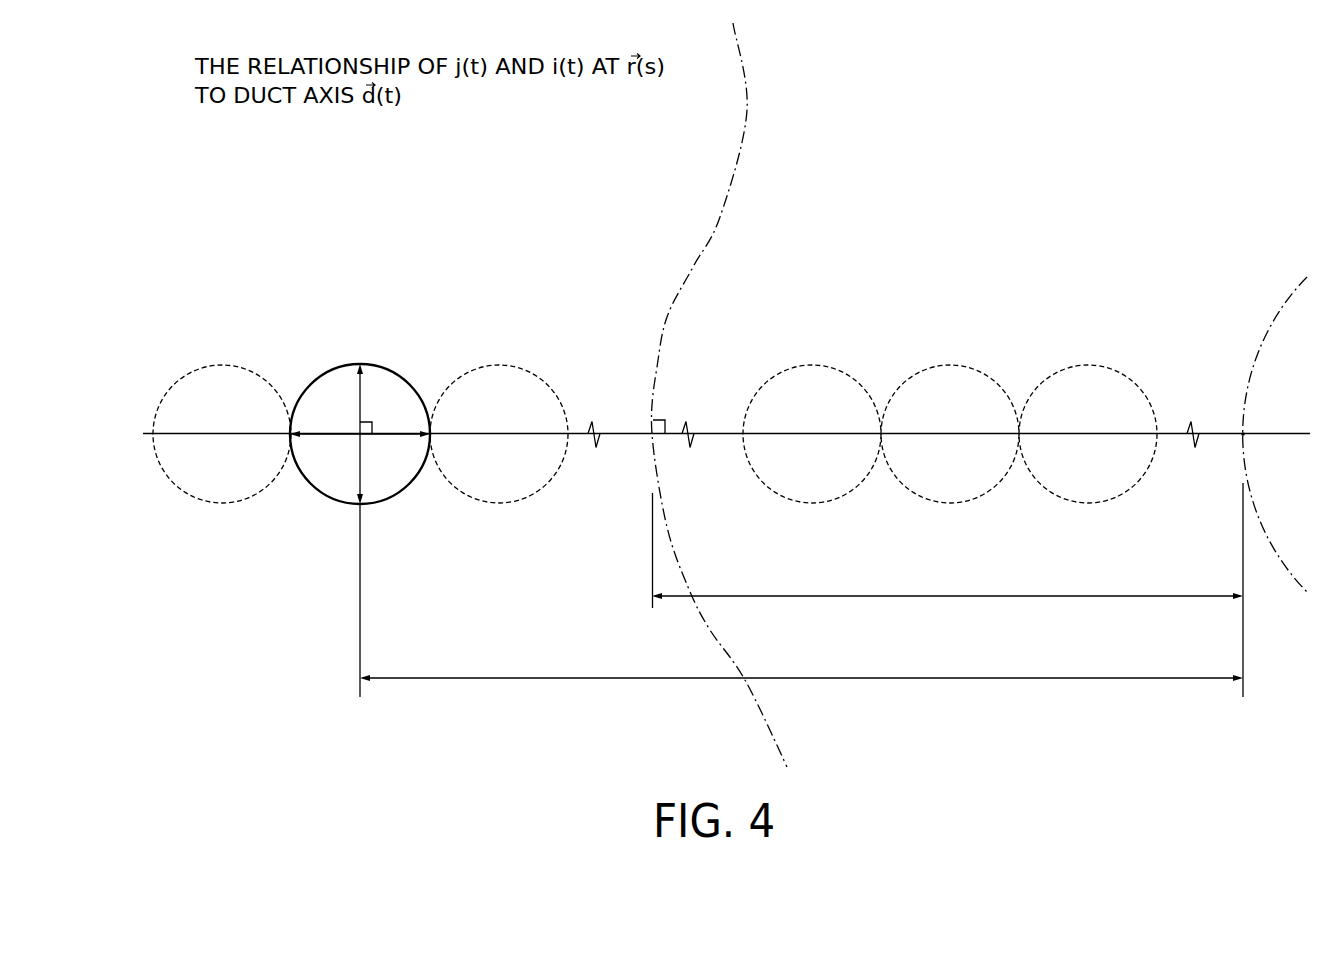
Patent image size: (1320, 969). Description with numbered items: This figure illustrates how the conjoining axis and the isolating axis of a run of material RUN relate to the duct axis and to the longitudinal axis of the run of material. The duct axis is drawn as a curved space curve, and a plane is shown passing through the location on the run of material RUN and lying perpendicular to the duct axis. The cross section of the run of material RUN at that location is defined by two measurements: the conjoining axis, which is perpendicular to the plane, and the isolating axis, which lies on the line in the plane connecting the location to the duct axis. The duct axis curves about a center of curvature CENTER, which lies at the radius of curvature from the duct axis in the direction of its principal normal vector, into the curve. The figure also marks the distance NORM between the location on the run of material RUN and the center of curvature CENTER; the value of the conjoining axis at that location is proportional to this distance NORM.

The run of material RUN is at (393, 369).
The center of curvature CENTER is at (1243, 434).
The distance between r(s) and the center of curvature p(t) NORM is at (958, 654).